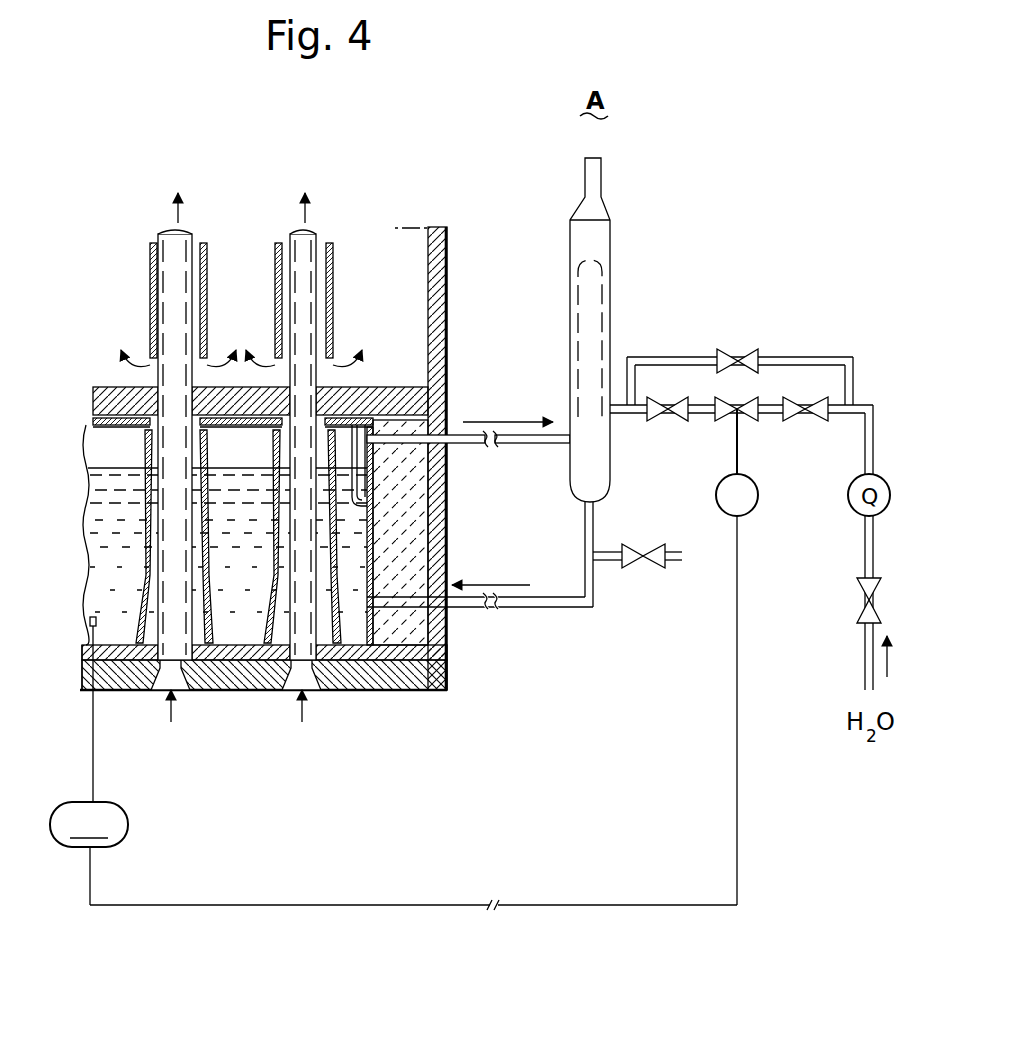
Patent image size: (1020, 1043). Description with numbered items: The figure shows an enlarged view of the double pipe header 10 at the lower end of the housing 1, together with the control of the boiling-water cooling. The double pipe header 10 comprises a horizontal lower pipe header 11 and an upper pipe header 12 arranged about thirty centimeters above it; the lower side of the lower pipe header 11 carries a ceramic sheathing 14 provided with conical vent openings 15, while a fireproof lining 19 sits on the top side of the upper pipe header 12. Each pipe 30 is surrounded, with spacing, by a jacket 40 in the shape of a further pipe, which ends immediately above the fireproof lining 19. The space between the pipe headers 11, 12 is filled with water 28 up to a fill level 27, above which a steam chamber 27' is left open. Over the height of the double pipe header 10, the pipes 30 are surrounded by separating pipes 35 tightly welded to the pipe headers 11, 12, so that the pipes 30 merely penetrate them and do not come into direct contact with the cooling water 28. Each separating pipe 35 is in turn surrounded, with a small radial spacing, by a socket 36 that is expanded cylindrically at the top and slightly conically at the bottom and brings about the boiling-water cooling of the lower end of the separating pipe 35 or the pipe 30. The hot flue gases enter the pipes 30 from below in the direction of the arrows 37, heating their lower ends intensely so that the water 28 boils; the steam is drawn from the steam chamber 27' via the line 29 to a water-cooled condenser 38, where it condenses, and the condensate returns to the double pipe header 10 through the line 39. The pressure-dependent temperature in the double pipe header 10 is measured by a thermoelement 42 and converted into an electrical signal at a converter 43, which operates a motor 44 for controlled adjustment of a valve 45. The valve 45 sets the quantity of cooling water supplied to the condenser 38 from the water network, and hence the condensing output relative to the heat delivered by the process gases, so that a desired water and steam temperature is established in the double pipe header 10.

The housing 1 is at (450, 308).
The double pipe header 10 is at (43, 416).
The lower pipe header 11 is at (92, 653).
The upper pipe header 12 is at (100, 421).
The ceramic sheathing 14 is at (228, 692).
The conical vent openings 15 is at (160, 683).
The fireproof lining 19 is at (105, 404).
The fill level 27 is at (207, 471).
The steam chamber 27' is at (294, 465).
The water 28 is at (105, 512).
The line 29 is at (455, 444).
The pipe 30 is at (192, 290).
The separating pipe 35 is at (203, 502).
The socket 36 is at (210, 596).
The arrows 37 is at (172, 732).
The condenser 38 is at (605, 248).
The line 39 is at (455, 608).
The jacket 40 is at (150, 268).
The thermoelement 42 is at (90, 612).
The converter 43 is at (118, 812).
The motor 44 is at (756, 500).
The valve 45 is at (740, 418).